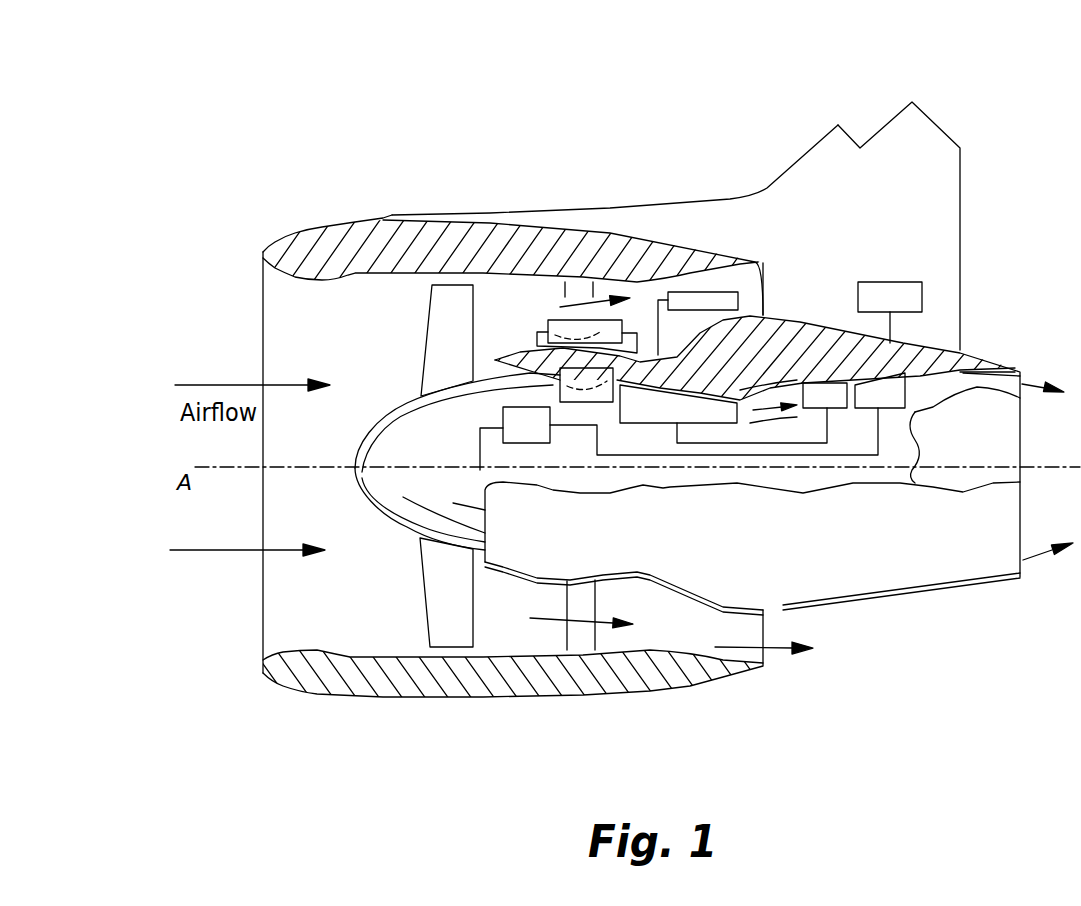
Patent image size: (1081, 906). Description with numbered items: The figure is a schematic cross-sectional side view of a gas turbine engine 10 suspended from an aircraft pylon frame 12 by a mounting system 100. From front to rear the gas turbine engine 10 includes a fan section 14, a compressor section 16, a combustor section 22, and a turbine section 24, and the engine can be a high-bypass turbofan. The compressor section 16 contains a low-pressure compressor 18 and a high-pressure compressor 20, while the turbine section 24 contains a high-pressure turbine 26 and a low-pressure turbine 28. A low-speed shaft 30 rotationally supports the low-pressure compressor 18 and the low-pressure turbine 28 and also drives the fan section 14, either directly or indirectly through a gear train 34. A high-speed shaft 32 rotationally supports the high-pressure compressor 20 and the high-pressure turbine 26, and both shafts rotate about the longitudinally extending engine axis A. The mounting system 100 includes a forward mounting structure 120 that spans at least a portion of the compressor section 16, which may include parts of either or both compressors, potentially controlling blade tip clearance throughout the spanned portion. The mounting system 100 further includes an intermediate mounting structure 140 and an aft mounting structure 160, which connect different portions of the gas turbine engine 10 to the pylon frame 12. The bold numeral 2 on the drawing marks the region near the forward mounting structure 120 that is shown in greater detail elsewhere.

The gas turbine engine 10 is at (366, 142).
The aircraft pylon frame 12 is at (932, 133).
The fan section 14 is at (385, 732).
The compressor section 16 is at (498, 732).
The low-pressure compressor 18 is at (500, 380).
The high-pressure compressor 20 is at (650, 405).
The combustor section 22 is at (762, 732).
The turbine section 24 is at (882, 732).
The high-pressure turbine 26 is at (832, 383).
The low-pressure turbine 28 is at (897, 385).
The low-speed shaft 30 is at (672, 487).
The high-speed shaft 32 is at (747, 447).
The gear train 34 is at (503, 416).
The mounting system 100 is at (730, 186).
The mounting structure 120 is at (548, 327).
The intermediate mounting structure 140 is at (705, 290).
The aft mounting structure 160 is at (893, 292).
The detail region shown in FIG. 2 is at (558, 321).